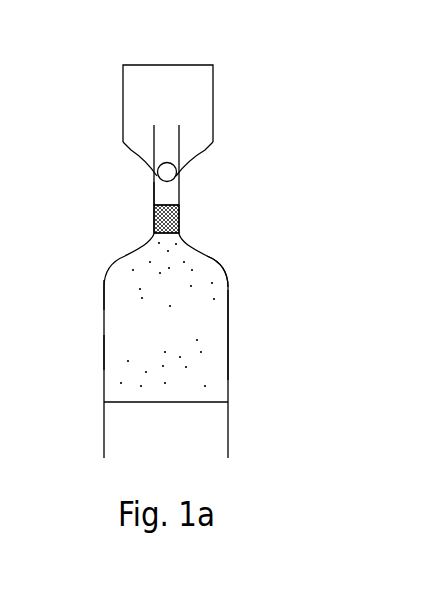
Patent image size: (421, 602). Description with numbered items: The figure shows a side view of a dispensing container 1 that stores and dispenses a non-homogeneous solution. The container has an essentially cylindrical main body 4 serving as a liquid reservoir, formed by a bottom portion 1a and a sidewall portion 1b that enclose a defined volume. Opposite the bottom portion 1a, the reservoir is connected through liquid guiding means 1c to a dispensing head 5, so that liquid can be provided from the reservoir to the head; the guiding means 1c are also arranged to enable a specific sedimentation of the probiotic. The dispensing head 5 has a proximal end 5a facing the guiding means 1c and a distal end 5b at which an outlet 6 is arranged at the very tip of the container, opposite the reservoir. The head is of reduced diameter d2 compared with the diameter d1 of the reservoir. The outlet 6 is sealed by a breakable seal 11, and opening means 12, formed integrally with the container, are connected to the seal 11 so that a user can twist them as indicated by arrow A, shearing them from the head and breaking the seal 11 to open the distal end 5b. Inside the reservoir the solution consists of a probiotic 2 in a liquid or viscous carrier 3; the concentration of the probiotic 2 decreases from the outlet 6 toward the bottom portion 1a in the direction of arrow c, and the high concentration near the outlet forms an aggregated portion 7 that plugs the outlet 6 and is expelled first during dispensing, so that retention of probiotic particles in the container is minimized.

The dispensing container 1 is at (92, 266).
The bottom portion 1a is at (228, 404).
The sidewall portion 1b is at (228, 355).
The liquid guiding means 1c is at (220, 263).
The probiotic 2 is at (119, 302).
The liquid or viscous carrier 3 is at (116, 358).
The main body 4 is at (226, 307).
The dispensing head 5 is at (181, 213).
The proximal end 5a is at (152, 239).
The distal end 5b is at (156, 180).
The outlet 6 is at (169, 173).
The aggregated portion 7 is at (152, 213).
The breakable seal 11 is at (197, 157).
The opening means 12 is at (208, 80).
The diameter of the liquid reservoir d1 is at (228, 452).
The diameter of the dispensing head d2 is at (202, 125).
The arrow A is at (192, 58).
The arrow c is at (331, 328).